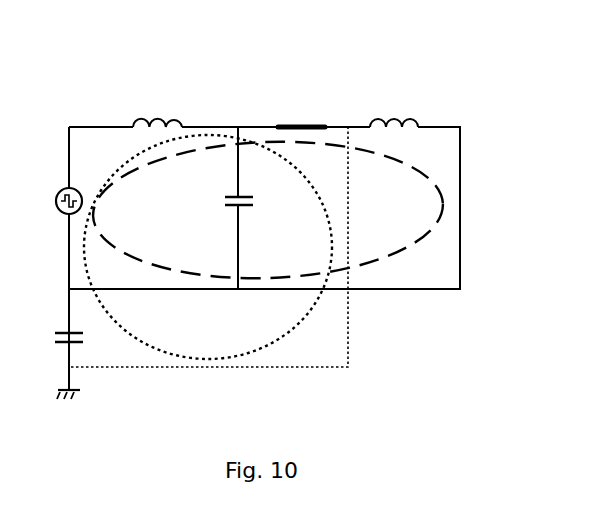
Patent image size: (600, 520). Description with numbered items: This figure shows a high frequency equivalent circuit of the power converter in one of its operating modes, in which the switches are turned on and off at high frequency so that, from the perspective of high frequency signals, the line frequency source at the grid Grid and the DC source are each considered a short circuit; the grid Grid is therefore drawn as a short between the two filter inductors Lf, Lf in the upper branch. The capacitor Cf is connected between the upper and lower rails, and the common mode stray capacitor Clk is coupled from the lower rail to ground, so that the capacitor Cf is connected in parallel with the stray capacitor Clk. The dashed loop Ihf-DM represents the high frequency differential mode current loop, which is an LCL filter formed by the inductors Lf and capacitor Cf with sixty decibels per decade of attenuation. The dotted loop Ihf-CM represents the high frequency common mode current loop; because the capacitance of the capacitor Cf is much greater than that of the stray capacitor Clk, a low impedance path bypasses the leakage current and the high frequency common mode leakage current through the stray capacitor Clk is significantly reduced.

The filter inductor Lf is at (275, 108).
The grid Grid is at (303, 115).
The capacitor Cf is at (251, 210).
The common mode stray capacitor Clk is at (81, 344).
The high frequency differential mode current loop Ihf-DM is at (268, 210).
The high frequency common mode current loop Ihf-CM is at (208, 247).